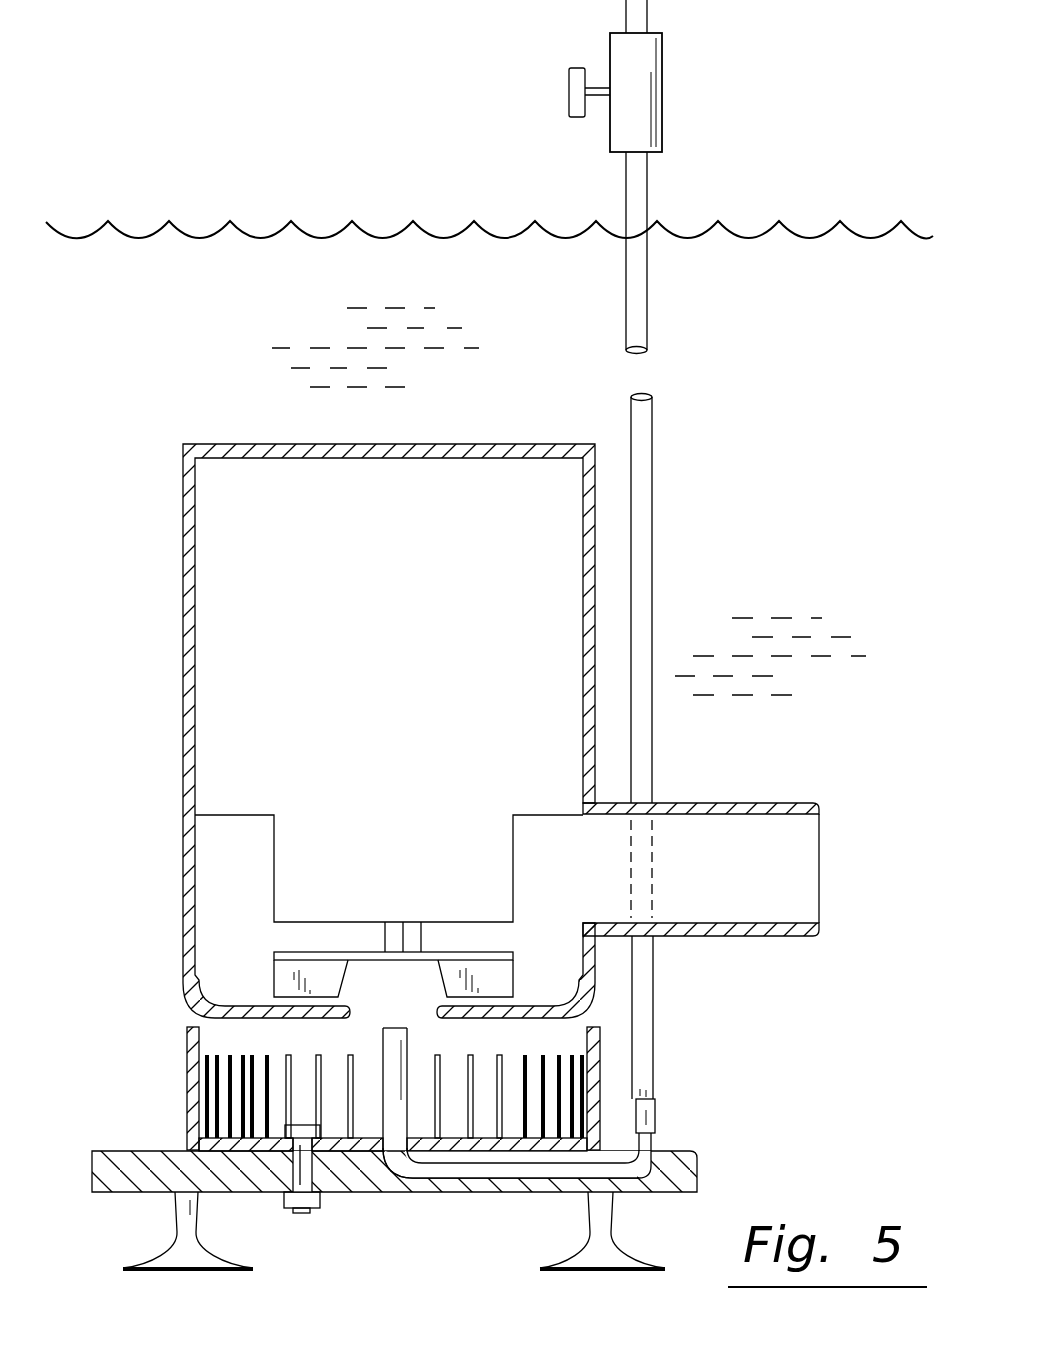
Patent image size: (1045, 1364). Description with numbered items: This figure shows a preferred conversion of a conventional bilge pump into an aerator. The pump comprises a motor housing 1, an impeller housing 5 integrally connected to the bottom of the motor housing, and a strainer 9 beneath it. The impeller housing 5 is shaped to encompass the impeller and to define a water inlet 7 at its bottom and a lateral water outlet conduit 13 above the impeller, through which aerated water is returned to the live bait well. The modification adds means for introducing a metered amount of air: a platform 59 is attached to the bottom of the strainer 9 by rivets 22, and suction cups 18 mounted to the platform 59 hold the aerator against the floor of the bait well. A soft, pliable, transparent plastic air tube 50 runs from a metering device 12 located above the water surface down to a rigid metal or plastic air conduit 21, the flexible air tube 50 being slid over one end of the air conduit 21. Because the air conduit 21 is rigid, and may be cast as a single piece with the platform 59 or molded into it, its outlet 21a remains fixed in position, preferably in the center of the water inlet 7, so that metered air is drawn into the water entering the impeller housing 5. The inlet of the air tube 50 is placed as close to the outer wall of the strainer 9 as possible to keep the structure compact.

The motor housing 1 is at (200, 632).
The impeller housing 5 is at (185, 868).
The water inlet 7 is at (362, 1025).
The strainer 9 is at (185, 1078).
The metering device 12 is at (612, 147).
The water outlet conduit 13 is at (820, 826).
The suction cups 18 is at (168, 1240).
The air conduit 21 is at (654, 1155).
The outlet of air conduit 21a is at (400, 1027).
The rivets 22 is at (313, 1213).
The air tube 50 is at (653, 1022).
The platform 59 is at (130, 1150).